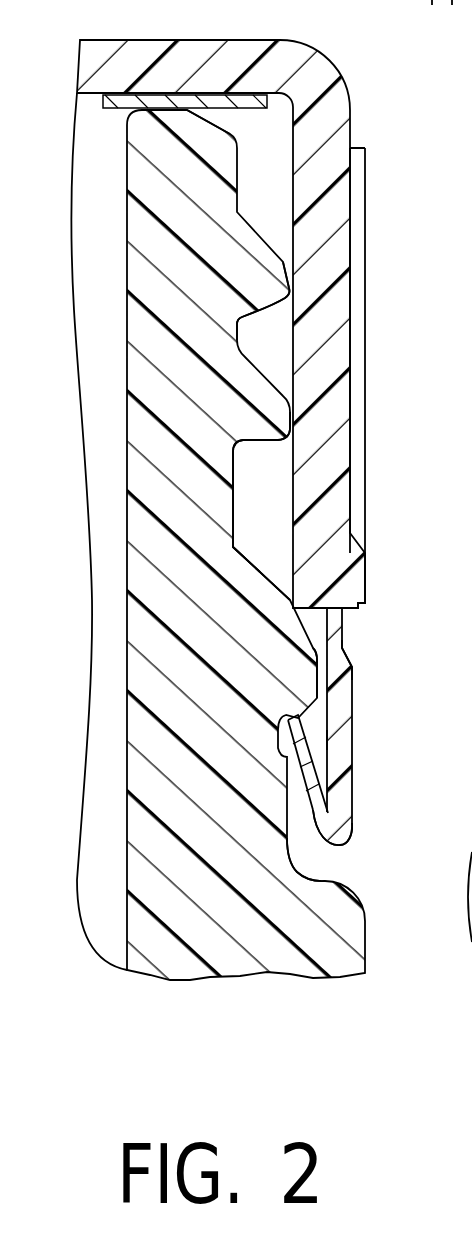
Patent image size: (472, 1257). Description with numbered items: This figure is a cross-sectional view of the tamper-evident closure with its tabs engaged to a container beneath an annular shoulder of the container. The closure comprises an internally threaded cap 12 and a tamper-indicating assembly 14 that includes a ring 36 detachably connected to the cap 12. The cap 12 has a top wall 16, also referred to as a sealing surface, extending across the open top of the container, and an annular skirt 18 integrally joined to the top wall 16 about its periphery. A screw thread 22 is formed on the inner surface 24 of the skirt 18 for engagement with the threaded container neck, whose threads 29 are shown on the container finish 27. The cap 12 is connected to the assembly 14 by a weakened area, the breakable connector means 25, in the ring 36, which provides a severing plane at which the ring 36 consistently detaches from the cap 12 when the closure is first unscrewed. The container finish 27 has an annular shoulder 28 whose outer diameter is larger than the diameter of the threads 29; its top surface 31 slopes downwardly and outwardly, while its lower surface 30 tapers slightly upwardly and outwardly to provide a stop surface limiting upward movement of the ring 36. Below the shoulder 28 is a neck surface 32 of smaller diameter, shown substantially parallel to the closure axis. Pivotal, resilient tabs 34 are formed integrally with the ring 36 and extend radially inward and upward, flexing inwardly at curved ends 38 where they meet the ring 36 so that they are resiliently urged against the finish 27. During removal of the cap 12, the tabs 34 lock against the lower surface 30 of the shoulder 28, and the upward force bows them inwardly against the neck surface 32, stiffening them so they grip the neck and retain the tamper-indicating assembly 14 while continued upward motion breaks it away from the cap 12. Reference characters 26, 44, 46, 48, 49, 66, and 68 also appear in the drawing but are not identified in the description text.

The cap 12 is at (238, 490).
The tamper-indicating assembly 14 is at (373, 739).
The top wall 16 is at (172, 44).
The annular skirt 18 is at (327, 477).
The screw thread 22 is at (245, 309).
The inner surface 24 is at (283, 162).
The breakable connector means 25 is at (343, 626).
The case end 26 is at (357, 610).
The container finish 27 is at (200, 1032).
The annular shoulder 28 is at (294, 670).
The threads 29 is at (282, 436).
The lower surface 30 is at (298, 773).
The top surface 31 is at (252, 584).
The neck surface 32 is at (290, 838).
The tabs 34 is at (316, 790).
The ring 36 is at (375, 686).
The curved ends 38 is at (343, 843).
The gasket strip 44 is at (106, 128).
The bond interface 46 is at (229, 112).
The inner surface of plate 48 is at (351, 197).
The outer plate 49 is at (366, 245).
The bend 66 is at (352, 652).
The recess 68 is at (323, 736).